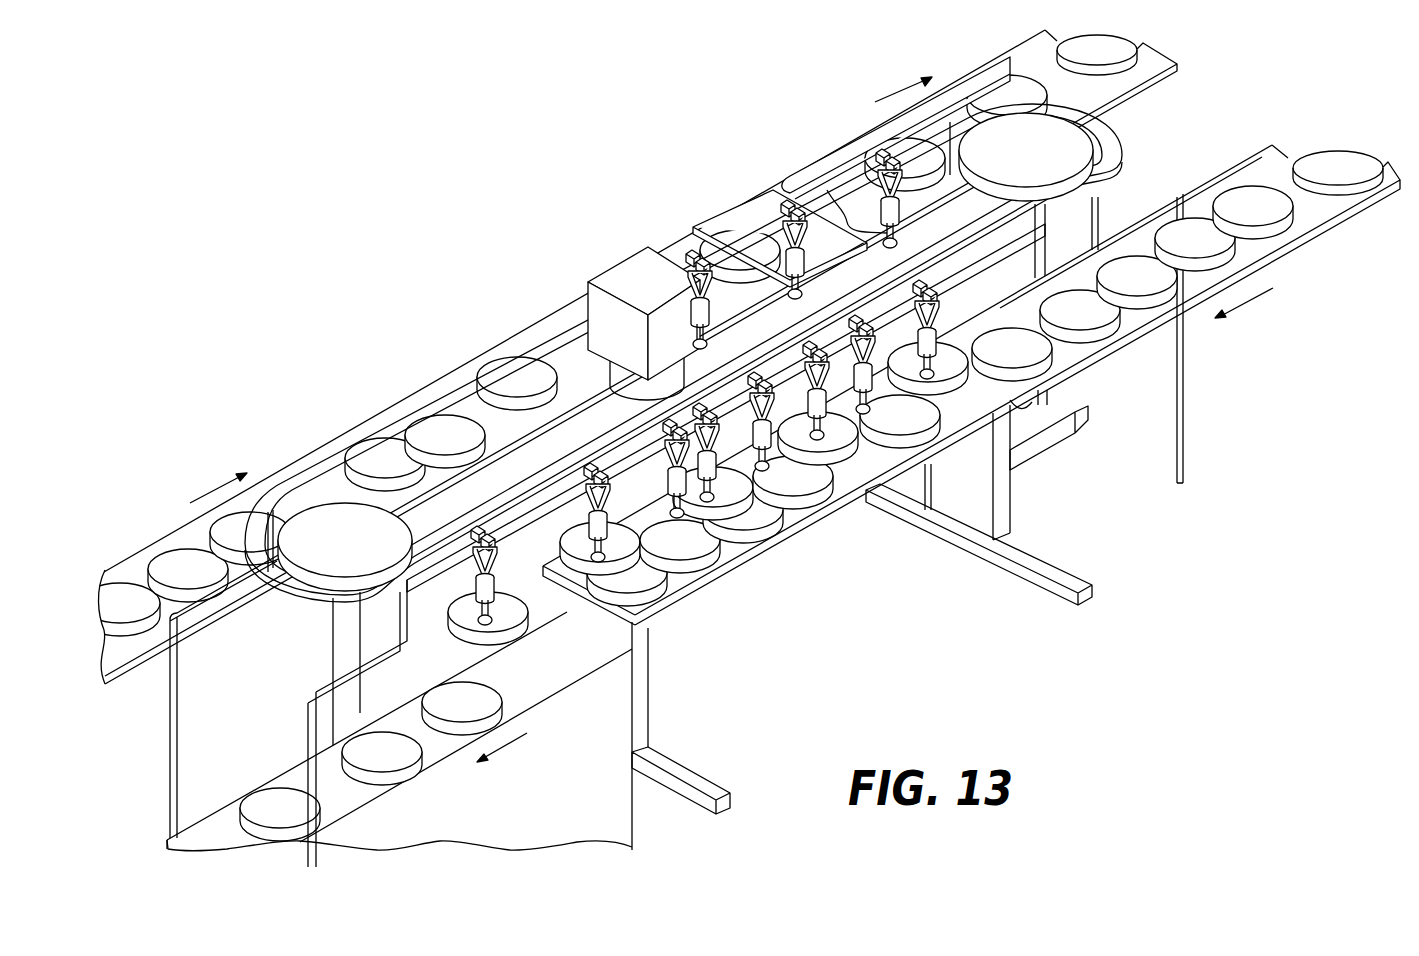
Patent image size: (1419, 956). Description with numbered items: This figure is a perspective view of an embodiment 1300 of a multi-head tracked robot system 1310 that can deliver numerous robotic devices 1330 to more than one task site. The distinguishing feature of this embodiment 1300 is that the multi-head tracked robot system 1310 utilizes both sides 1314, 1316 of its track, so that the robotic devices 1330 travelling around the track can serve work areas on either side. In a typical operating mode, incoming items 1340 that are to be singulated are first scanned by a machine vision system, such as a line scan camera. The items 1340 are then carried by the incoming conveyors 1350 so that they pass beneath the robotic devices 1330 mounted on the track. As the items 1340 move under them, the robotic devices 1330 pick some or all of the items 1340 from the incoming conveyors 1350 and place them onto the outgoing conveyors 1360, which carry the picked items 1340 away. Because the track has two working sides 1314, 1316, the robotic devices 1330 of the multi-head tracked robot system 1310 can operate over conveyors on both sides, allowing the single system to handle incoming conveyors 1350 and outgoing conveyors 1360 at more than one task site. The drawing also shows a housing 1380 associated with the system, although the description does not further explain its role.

The embodiment 1300 is at (327, 171).
The multi-head tracked robot system 1310 is at (313, 483).
The side of the track 1314 is at (543, 508).
The side of the track 1316 is at (432, 405).
The robotic devices 1330 is at (893, 207).
The items 1340 is at (760, 515).
The incoming conveyors 1350 is at (555, 330).
The outgoing conveyors 1360 is at (825, 160).
The control unit housing 1380 is at (628, 268).